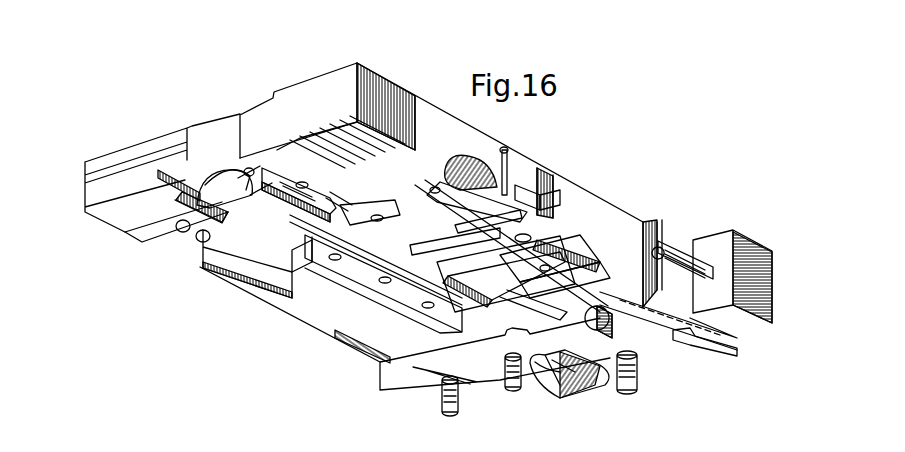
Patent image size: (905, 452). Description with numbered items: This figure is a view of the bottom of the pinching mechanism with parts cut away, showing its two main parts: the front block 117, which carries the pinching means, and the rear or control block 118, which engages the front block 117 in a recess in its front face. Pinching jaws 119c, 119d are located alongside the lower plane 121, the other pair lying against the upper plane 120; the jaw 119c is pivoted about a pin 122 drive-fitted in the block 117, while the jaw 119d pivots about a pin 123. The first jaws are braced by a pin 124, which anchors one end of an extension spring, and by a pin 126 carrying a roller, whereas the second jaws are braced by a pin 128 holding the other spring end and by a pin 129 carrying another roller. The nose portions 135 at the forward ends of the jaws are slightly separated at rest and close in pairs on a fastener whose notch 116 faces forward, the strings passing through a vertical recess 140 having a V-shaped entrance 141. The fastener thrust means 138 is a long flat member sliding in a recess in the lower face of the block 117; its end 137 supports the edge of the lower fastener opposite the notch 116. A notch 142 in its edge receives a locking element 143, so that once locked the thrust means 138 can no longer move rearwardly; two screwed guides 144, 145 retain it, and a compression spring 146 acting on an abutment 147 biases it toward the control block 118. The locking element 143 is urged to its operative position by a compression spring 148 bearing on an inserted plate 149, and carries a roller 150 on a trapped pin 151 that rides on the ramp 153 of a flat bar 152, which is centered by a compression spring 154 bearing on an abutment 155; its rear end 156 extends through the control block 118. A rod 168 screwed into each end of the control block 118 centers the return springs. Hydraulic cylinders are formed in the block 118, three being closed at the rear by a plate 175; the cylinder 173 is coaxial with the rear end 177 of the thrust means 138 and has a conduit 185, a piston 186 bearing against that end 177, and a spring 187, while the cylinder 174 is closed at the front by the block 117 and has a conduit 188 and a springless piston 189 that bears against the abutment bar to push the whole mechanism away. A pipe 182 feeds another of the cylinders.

The notch 116 is at (248, 170).
The front block 117 is at (573, 186).
The rear or control block 118 is at (722, 232).
The pinching jaw 119c is at (282, 283).
The pinching jaw 119d is at (347, 142).
The upper plane 120 is at (257, 103).
The lower plane 121 is at (165, 145).
The pin 122 is at (185, 200).
The pin 123 is at (302, 182).
The pin 124 is at (268, 232).
The pin 126 is at (280, 240).
The pin 128 is at (340, 200).
The pin 129 is at (377, 217).
The nose portions 135 is at (180, 150).
The end of fastener thrust means 137 is at (292, 172).
The fastener thrust means 138 is at (360, 250).
The vertical recess 140 is at (250, 173).
The V-shaped entrance 141 is at (227, 170).
The notch 142 is at (440, 243).
The locking element 143 is at (417, 255).
The screwed guide 144 is at (405, 302).
The screwed guide 145 is at (573, 247).
The compression spring 146 is at (487, 287).
The abutment 147 is at (538, 233).
The compression spring 148 is at (528, 178).
The inserted plate 149 is at (543, 182).
The roller 150 is at (503, 153).
The trapped pin 151 is at (456, 223).
The flat bar 152 is at (573, 237).
The ramp 153 is at (505, 147).
The compression spring 154 is at (447, 172).
The abutment 155 is at (440, 183).
The rear end 156 is at (720, 350).
The rod 168 is at (680, 250).
The cylinder 173 is at (627, 307).
The cylinder 174 is at (563, 382).
The plate 175 is at (493, 388).
The rear end 177 is at (560, 273).
The pipe 182 is at (448, 413).
The conduit 185 is at (640, 380).
The piston 186 is at (590, 332).
The spring 187 is at (587, 288).
The conduit 188 is at (520, 385).
The piston 189 is at (590, 385).